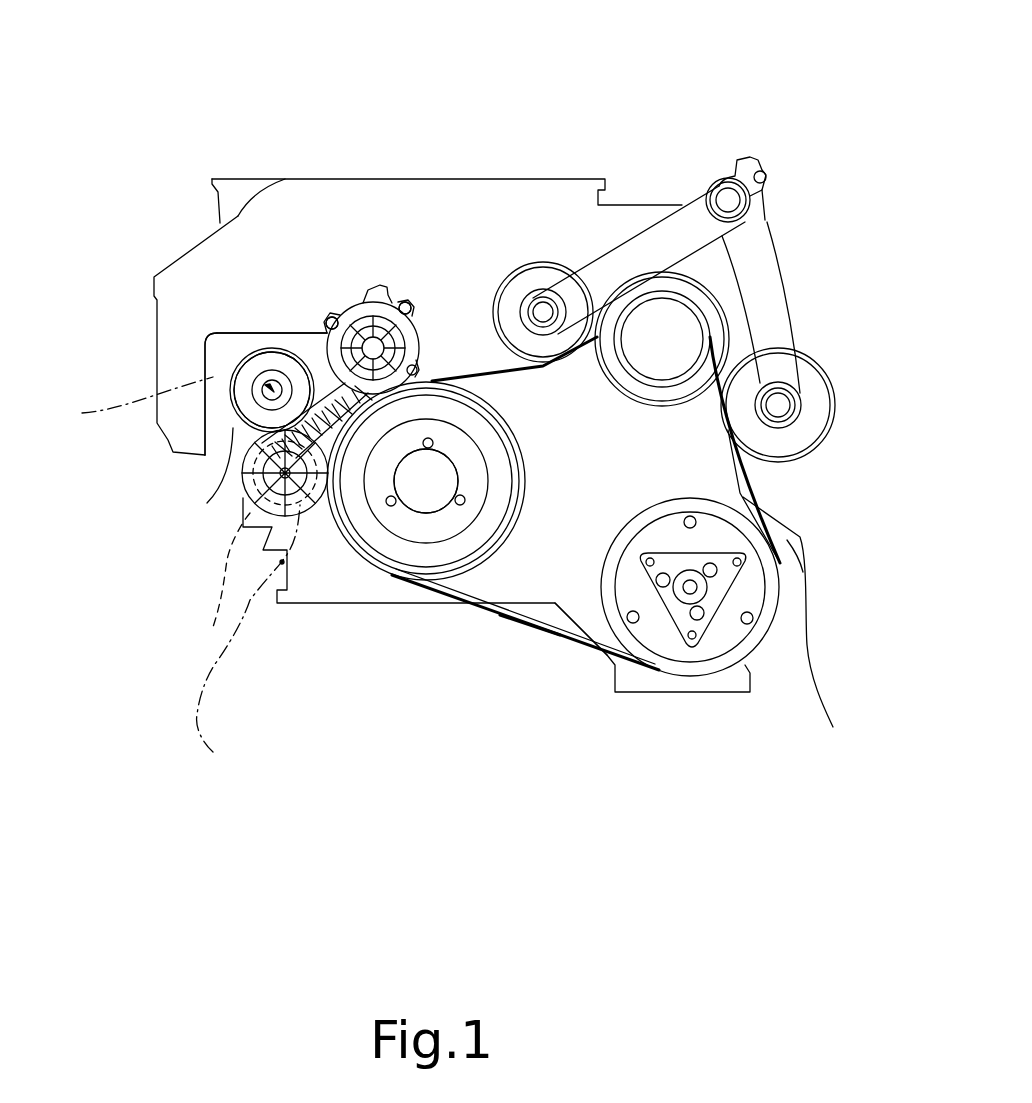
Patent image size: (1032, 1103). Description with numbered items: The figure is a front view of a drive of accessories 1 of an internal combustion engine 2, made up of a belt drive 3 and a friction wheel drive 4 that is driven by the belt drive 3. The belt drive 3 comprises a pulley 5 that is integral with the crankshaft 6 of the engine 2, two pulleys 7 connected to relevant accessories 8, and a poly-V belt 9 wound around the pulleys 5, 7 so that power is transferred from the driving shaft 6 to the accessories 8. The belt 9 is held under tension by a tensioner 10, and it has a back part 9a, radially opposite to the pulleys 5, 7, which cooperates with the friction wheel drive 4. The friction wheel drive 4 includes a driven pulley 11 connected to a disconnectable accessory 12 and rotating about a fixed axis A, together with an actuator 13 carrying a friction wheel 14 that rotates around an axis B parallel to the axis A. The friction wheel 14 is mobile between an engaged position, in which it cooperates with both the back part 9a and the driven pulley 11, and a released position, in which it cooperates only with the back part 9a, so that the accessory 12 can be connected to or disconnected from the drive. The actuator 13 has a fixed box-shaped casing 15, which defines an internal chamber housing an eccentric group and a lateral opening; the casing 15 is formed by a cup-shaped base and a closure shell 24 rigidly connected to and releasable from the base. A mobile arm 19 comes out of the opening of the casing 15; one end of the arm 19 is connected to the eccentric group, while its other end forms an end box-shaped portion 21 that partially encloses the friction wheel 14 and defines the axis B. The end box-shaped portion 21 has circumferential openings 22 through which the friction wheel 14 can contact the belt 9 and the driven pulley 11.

The drive of accessories 1 is at (322, 737).
The internal combustion engine 2 is at (328, 250).
The belt drive 3 is at (583, 645).
The friction wheel drive 4 is at (222, 408).
The pulley 5 is at (480, 487).
The crankshaft 6 is at (440, 470).
The pulleys 7 is at (648, 342).
The accessories 8 is at (717, 270).
The poly-V belt 9 is at (520, 618).
The back part 9a is at (432, 590).
The tensioner 10 is at (683, 227).
The driven pulley 11 is at (252, 372).
The disconnectable accessory 12 is at (278, 337).
The actuator 13 is at (420, 313).
The friction wheel 14 is at (214, 585).
The casing 15 is at (378, 326).
The mobile arm 19 is at (356, 436).
The end box-shaped portion 21 is at (233, 500).
The circumferential openings 22 is at (327, 477).
The closure shell 24 is at (352, 285).
The axis A is at (131, 405).
The axis B is at (248, 645).